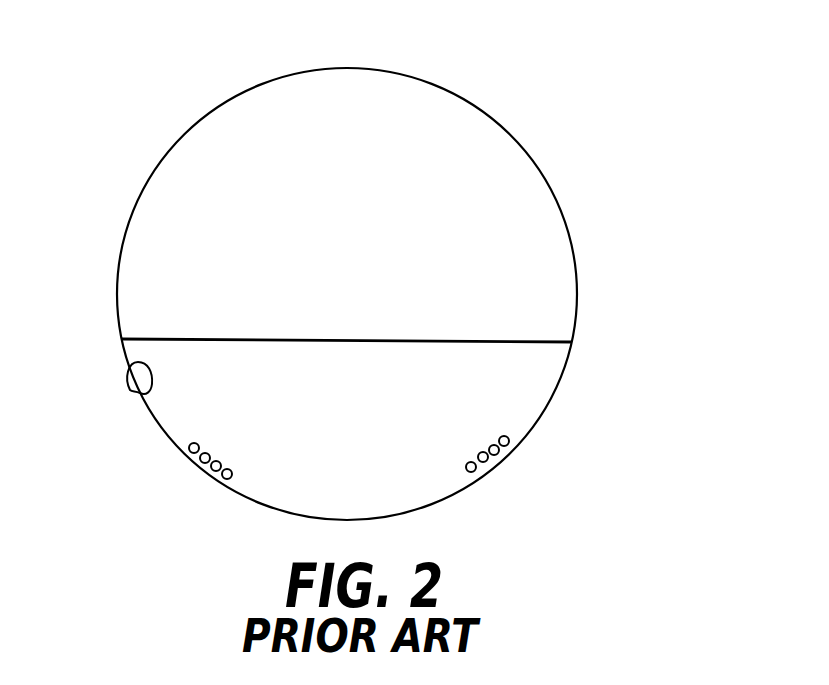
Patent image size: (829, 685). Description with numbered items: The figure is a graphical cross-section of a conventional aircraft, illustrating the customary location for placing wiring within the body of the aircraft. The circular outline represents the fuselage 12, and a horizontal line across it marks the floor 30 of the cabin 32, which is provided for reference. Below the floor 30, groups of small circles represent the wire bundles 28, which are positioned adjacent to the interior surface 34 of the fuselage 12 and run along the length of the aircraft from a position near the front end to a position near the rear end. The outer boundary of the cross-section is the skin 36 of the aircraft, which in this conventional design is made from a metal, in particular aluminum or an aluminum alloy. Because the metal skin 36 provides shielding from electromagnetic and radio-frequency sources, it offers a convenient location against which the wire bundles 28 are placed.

The fuselage 12 is at (564, 222).
The wire bundles 28 is at (212, 453).
The floor 30 is at (310, 338).
The cabin 32 is at (468, 150).
The interior surface 34 is at (140, 392).
The skin 36 is at (140, 202).